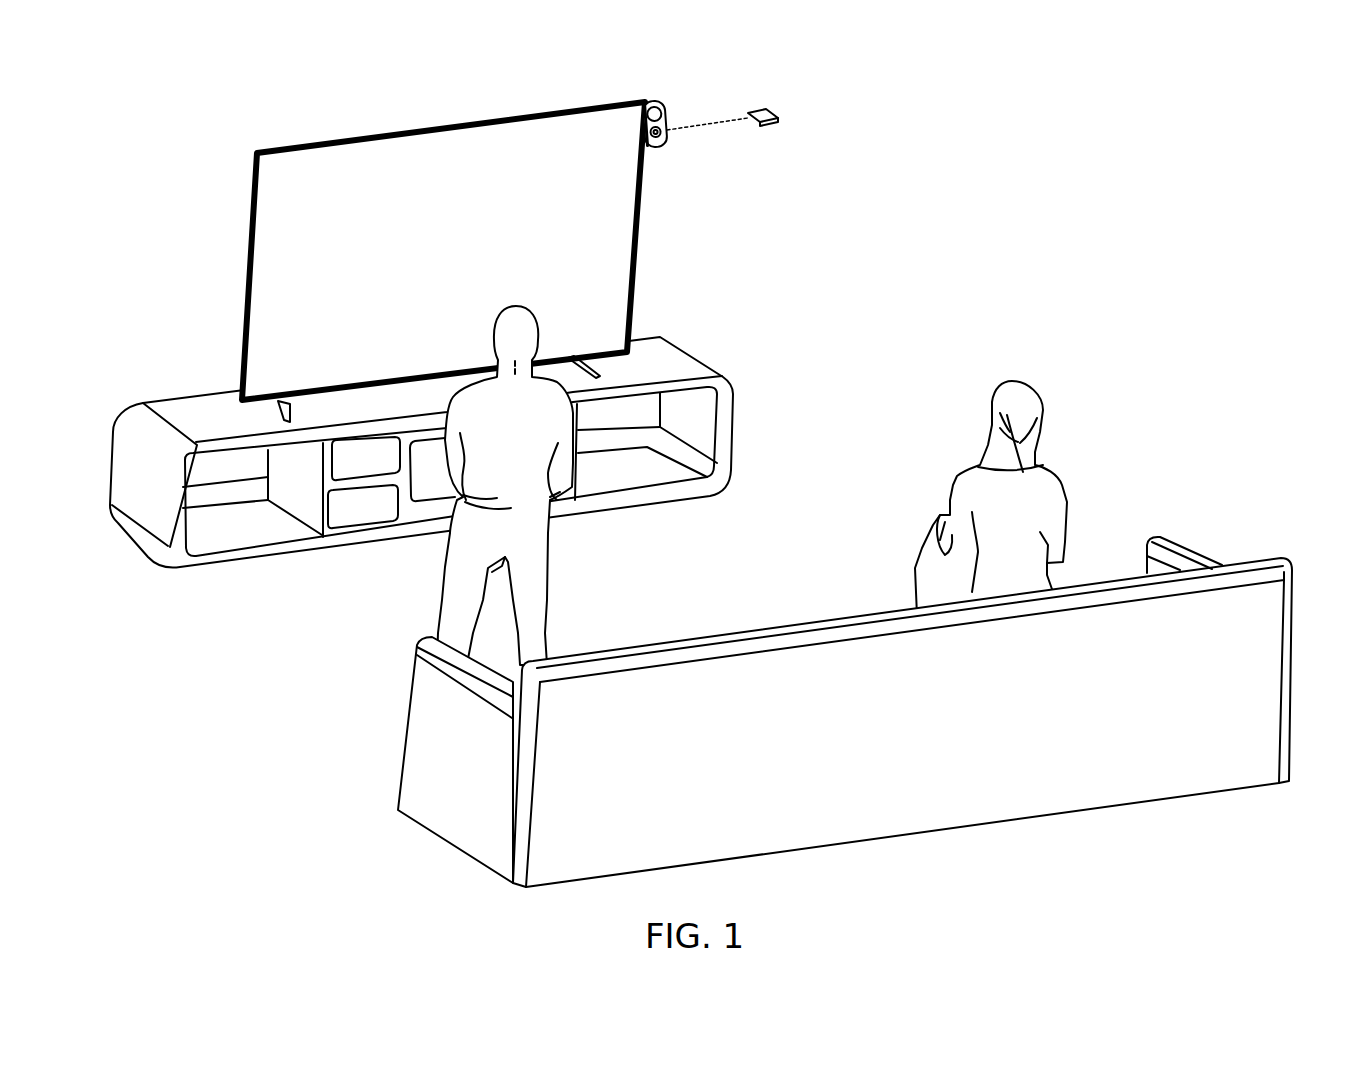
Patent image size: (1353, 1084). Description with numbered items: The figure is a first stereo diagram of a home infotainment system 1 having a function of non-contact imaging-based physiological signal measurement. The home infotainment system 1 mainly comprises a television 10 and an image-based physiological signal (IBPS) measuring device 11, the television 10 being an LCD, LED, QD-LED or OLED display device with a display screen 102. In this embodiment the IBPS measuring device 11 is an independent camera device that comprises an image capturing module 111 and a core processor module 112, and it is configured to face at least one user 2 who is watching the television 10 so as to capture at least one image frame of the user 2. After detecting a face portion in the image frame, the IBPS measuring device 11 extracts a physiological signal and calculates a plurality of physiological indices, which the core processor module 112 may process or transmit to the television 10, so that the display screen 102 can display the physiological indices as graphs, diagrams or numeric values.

The home infotainment system 1 is at (1035, 176).
The television 10 is at (249, 151).
The display screen 102 is at (621, 233).
The image-based physiological signal (IBPS) measuring device 11 is at (760, 103).
The image capturing module 111 is at (665, 142).
The core processor module 112 is at (778, 121).
The user 2 is at (562, 540).